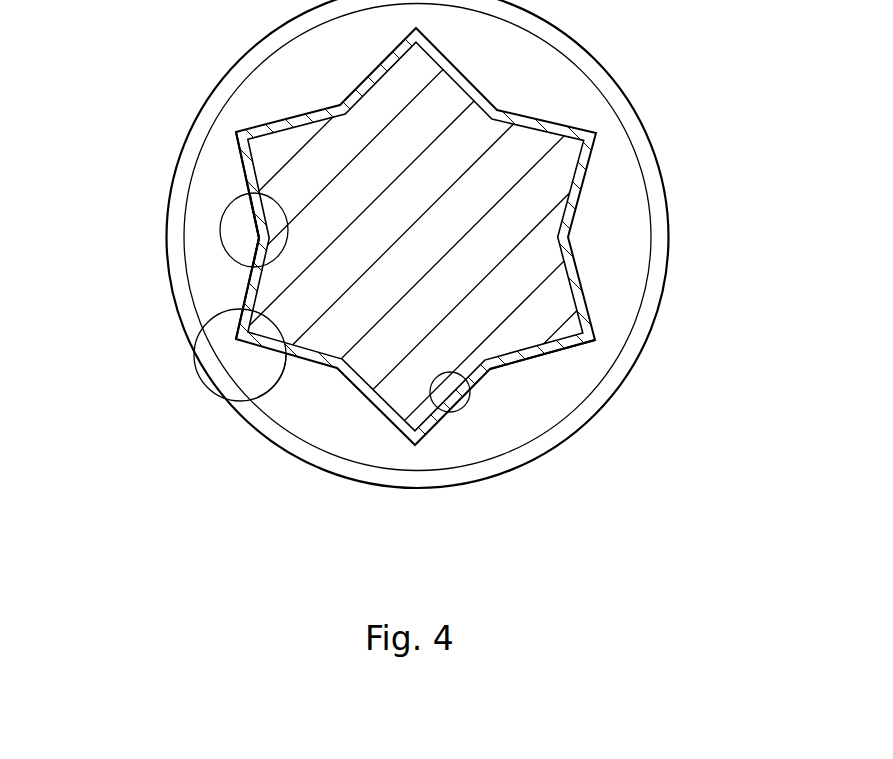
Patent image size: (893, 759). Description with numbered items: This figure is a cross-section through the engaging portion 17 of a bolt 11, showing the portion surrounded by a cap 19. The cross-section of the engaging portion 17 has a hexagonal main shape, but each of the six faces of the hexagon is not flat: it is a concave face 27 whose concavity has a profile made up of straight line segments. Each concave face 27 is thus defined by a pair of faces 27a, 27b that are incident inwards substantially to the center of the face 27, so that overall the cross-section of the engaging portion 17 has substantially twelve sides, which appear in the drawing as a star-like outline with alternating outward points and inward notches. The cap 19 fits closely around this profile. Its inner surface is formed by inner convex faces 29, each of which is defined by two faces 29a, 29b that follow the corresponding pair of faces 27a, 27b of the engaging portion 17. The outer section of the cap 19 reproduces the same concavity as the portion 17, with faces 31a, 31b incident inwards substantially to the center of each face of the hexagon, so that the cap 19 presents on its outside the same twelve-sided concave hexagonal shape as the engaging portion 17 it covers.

The bolt 11 is at (202, 510).
The engaging portion 17 is at (453, 140).
The cap 19 is at (582, 199).
The concave face 27 is at (537, 353).
The first face of the pair 27a is at (246, 161).
The second face of the pair 27b is at (250, 285).
The inner convex face 29 is at (430, 400).
The first inner cap face 29a is at (254, 266).
The second inner cap face 29b is at (257, 395).
The first outer cap face 31a is at (245, 193).
The second outer cap face 31b is at (213, 309).